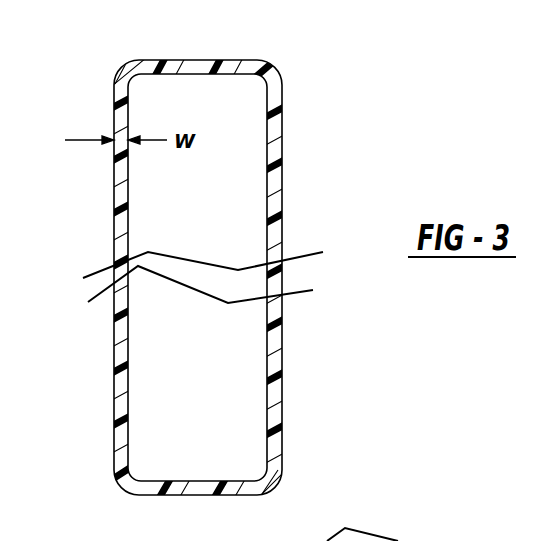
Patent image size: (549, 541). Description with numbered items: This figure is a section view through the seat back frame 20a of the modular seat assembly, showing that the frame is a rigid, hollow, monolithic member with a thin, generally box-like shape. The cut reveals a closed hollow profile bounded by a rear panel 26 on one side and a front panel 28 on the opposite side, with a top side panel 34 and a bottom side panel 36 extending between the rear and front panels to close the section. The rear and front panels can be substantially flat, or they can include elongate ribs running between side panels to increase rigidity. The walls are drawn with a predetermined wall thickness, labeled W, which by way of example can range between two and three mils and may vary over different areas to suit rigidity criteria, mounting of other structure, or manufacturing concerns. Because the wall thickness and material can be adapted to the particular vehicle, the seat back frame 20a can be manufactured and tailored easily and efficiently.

The seat back frame 20a is at (280, 75).
The rear panel 26 is at (272, 180).
The front panel 28 is at (120, 352).
The top side panel 34 is at (198, 60).
The bottom side panel 36 is at (172, 488).